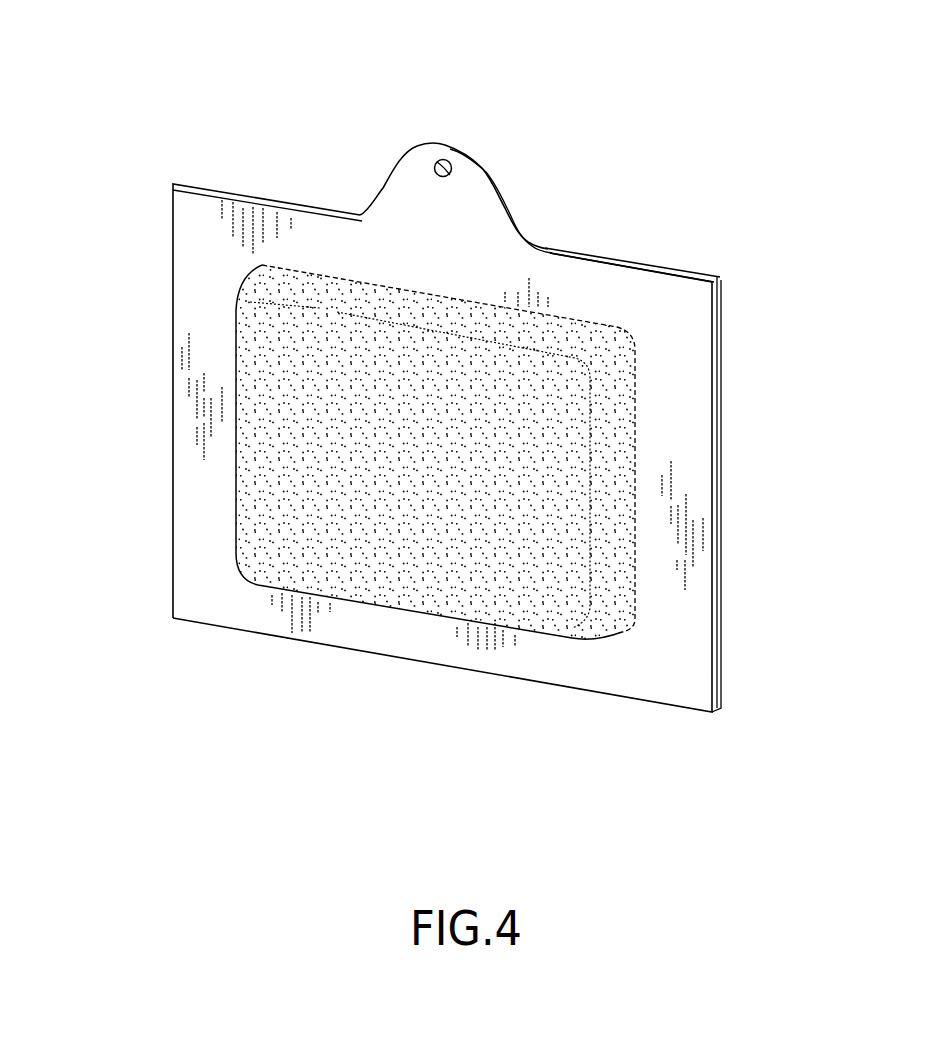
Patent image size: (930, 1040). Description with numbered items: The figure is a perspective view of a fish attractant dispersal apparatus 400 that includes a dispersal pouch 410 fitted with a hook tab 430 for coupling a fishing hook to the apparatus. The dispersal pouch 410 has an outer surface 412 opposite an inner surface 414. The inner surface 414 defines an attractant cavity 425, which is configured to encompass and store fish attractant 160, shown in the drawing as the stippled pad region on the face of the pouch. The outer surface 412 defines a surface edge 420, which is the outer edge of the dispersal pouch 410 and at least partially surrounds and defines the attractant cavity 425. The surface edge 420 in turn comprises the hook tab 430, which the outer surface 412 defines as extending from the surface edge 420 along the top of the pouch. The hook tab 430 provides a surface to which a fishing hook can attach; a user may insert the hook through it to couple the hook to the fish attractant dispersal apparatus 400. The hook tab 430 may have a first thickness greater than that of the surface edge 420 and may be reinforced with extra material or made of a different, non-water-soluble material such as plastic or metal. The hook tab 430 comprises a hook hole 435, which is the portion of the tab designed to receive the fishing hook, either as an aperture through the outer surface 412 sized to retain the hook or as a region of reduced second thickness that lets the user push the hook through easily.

The fish attractant dispersal apparatus 400 is at (208, 122).
The dispersal pouch 410 is at (138, 306).
The outer surface 412 is at (245, 613).
The inner surface 414 is at (358, 588).
The surface edge 420 is at (687, 292).
The attractant cavity 425 is at (456, 594).
The hook tab 430 is at (483, 198).
The hook hole 435 is at (450, 162).
The fish attractant 160 is at (577, 450).